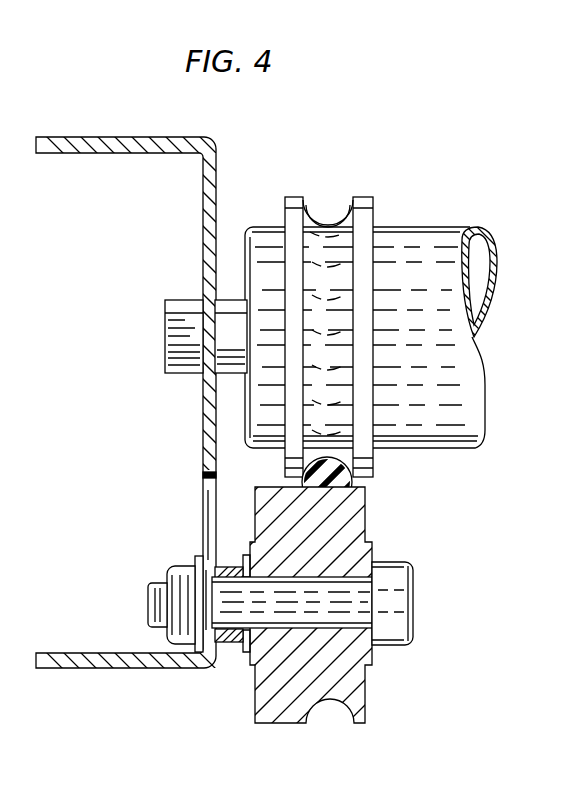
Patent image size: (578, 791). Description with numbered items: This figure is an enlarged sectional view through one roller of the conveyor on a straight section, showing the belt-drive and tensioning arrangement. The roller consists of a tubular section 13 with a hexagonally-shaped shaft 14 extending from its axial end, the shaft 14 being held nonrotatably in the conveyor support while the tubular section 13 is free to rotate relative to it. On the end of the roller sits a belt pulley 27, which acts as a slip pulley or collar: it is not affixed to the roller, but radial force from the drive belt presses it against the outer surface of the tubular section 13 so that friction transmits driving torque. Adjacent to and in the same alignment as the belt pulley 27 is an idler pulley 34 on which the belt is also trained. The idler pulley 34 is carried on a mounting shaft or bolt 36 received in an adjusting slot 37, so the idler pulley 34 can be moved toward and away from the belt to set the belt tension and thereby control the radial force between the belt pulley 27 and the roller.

The tubular section 13 is at (467, 228).
The hexagonally-shaped shaft 14 is at (181, 302).
The belt pulley 27 is at (293, 210).
The idler pulley 34 is at (352, 677).
The mounting shaft or bolt 36 is at (360, 608).
The adjusting slot 37 is at (204, 493).